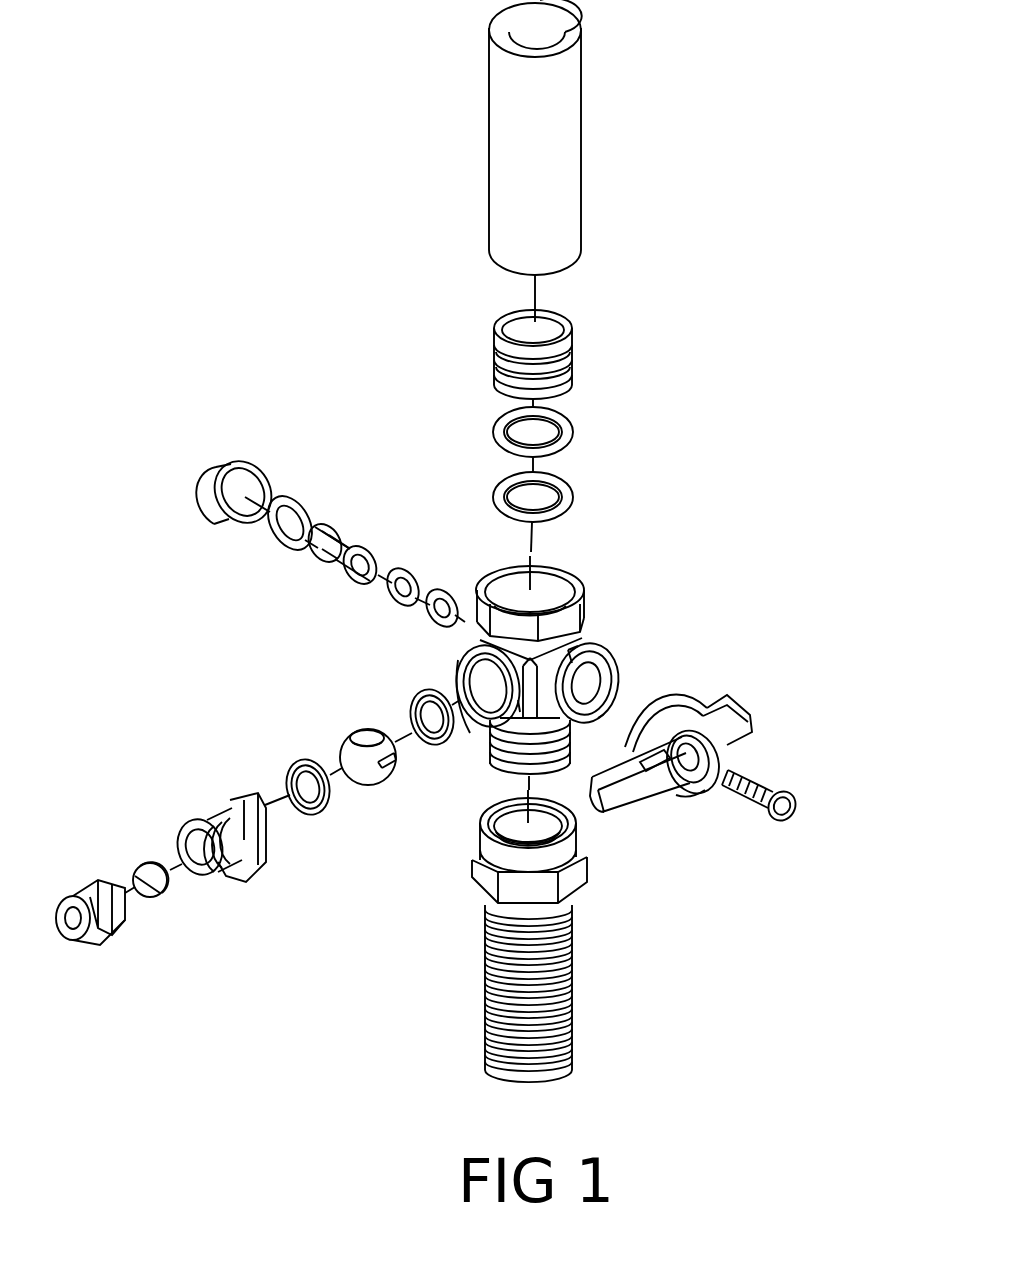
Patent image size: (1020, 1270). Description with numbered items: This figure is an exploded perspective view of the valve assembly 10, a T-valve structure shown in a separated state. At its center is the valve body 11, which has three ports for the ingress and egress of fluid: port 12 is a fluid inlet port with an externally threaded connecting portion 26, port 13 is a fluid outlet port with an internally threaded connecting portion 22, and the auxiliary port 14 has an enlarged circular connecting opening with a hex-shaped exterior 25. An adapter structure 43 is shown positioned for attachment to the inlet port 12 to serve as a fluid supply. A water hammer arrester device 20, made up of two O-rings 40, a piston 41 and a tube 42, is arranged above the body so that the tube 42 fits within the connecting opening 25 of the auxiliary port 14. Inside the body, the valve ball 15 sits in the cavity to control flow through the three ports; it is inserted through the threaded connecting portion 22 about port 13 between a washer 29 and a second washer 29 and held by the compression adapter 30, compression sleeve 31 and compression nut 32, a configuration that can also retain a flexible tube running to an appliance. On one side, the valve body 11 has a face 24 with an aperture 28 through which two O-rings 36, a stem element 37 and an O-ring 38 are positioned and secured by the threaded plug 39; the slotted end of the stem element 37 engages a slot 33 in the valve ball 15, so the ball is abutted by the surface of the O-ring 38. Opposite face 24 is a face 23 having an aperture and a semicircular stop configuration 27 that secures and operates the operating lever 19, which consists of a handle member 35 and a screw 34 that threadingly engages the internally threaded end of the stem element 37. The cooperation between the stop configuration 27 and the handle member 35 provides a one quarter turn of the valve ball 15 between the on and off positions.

The valve assembly 10 is at (386, 412).
The valve body 11 is at (667, 620).
The port 12 is at (480, 775).
The port 13 is at (476, 734).
The port 14 is at (614, 573).
The valve ball 15 is at (380, 787).
The operating lever 19 is at (775, 713).
The water hammer arrester device 20 is at (610, 337).
The internally threaded connecting portion 22 is at (455, 680).
The face 23 is at (597, 682).
The face 24 is at (470, 650).
The hex-shaped exterior 25 is at (585, 595).
The externally threaded connecting portion 26 is at (530, 792).
The semicircular stop configuration 27 is at (602, 660).
The aperture 28 is at (438, 659).
The washer 29 is at (408, 717).
The compression adapter 30 is at (197, 873).
The compression sleeve 31 is at (153, 900).
The compression nut 32 is at (90, 947).
The slot 33 is at (390, 775).
The screw 34 is at (775, 817).
The handle member 35 is at (687, 793).
The O-rings 36 is at (443, 590).
The stem element 37 is at (330, 565).
The O-ring 38 is at (270, 547).
The threaded plug 39 is at (218, 505).
The O-rings 40 is at (575, 430).
The piston 41 is at (573, 362).
The tube 42 is at (580, 207).
The adapter structure 43 is at (572, 995).